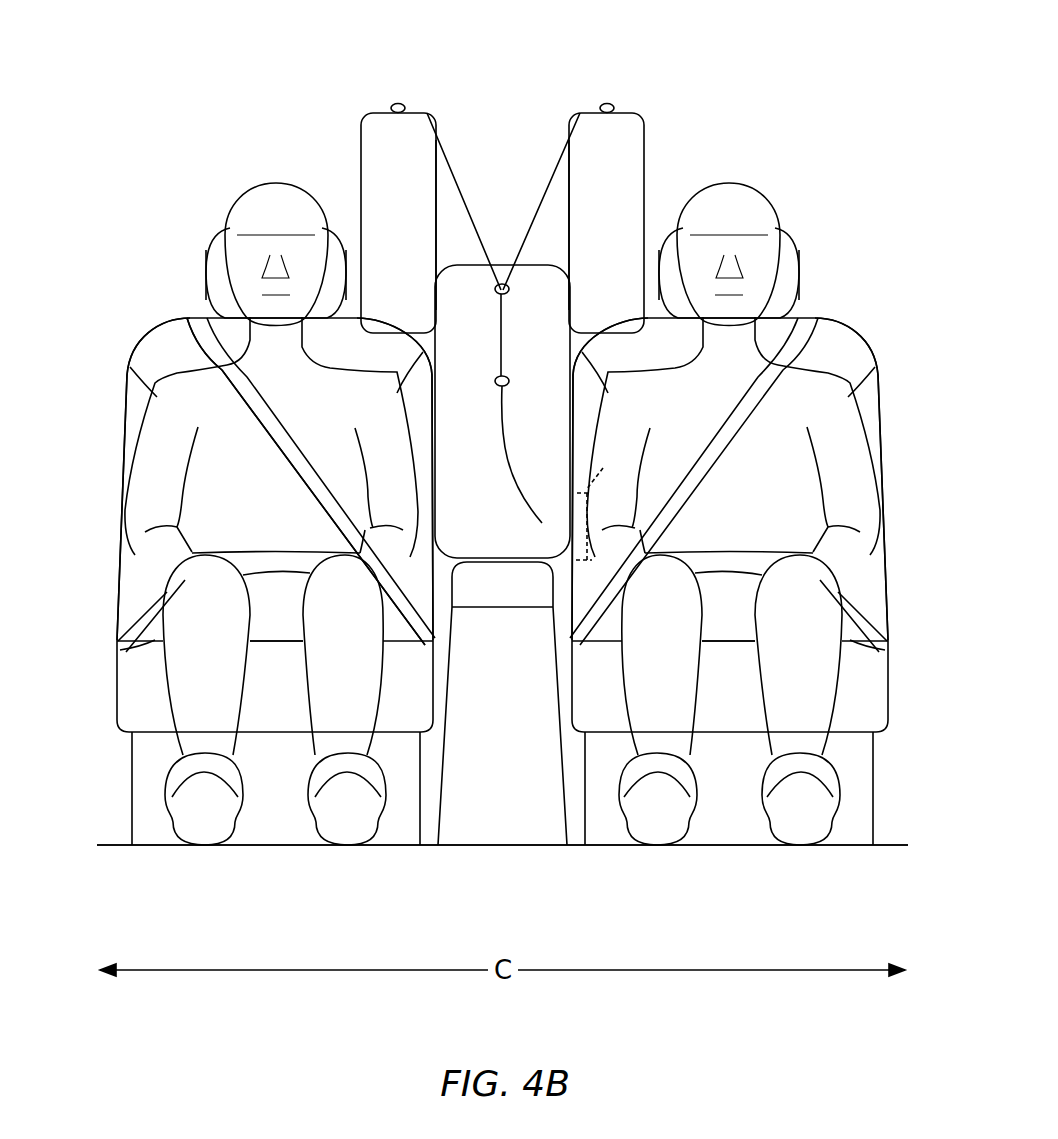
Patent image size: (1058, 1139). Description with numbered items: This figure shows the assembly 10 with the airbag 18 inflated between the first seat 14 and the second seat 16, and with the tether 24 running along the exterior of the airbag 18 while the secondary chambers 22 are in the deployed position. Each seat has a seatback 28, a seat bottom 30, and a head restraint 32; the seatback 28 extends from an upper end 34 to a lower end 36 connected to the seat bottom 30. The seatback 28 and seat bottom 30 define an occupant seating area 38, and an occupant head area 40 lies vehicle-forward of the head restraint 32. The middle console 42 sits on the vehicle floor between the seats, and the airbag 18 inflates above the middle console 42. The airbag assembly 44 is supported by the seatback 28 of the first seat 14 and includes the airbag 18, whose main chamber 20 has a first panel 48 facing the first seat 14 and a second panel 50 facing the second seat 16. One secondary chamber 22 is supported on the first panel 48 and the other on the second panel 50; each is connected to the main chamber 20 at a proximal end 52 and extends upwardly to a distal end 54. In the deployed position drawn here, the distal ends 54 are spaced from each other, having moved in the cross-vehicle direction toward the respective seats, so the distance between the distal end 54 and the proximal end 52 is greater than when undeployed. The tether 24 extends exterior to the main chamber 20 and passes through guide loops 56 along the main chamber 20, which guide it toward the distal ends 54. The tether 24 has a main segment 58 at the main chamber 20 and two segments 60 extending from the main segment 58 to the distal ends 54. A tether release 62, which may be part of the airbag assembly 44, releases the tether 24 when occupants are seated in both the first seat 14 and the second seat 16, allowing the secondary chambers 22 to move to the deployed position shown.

The assembly 10 is at (763, 95).
The first seat 14 is at (893, 535).
The second seat 16 is at (112, 535).
The airbag 18 is at (500, 262).
The main chamber 20 is at (455, 490).
The secondary chambers 22 is at (360, 125).
The tether 24 is at (496, 436).
The seatback 28 is at (170, 357).
The seat bottom 30 is at (142, 698).
The head restraint 32 is at (221, 252).
The upper end 34 is at (184, 318).
The lower end 36 is at (147, 650).
The occupant seating area 38 is at (272, 620).
The occupant head area 40 is at (196, 292).
The middle console 42 is at (502, 808).
The airbag assembly 44 is at (502, 279).
The first panel 48 is at (615, 378).
The second panel 50 is at (393, 377).
The proximal end 52 is at (435, 305).
The distal end 54 is at (395, 105).
The guide loops 56 is at (509, 290).
The main segment 58 is at (518, 505).
The segments 60 is at (500, 340).
The tether release 62 is at (603, 468).